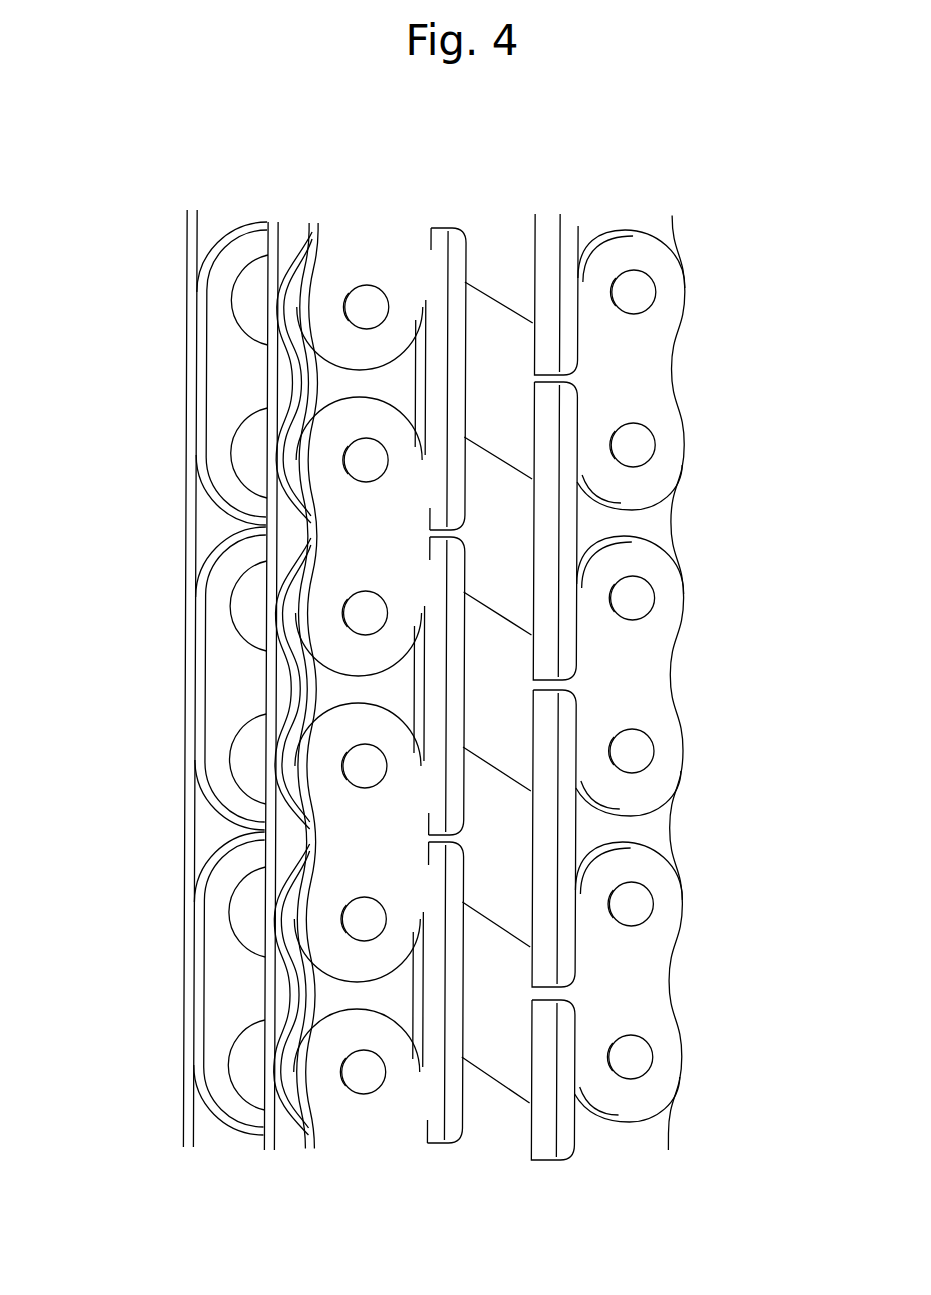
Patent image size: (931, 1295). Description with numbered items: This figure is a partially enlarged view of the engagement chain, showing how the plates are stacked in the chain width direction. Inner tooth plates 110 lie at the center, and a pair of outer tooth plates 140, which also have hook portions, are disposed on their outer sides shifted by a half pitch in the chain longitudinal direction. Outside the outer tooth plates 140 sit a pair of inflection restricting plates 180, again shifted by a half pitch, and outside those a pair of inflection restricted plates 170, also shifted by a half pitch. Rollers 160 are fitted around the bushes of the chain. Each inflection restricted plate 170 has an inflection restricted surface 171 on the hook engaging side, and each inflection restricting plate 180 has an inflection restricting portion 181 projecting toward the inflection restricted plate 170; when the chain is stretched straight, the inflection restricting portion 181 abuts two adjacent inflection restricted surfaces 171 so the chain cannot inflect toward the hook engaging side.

The inner tooth plate 110 is at (232, 368).
The outer tooth plate 140 is at (203, 228).
The roller 160 is at (247, 1070).
The inflection restricted plate 170 is at (354, 270).
The inflection restricted surface 171 is at (432, 508).
The inflection restricting plate 180 is at (306, 225).
The inflection restricting portion 181 is at (455, 262).